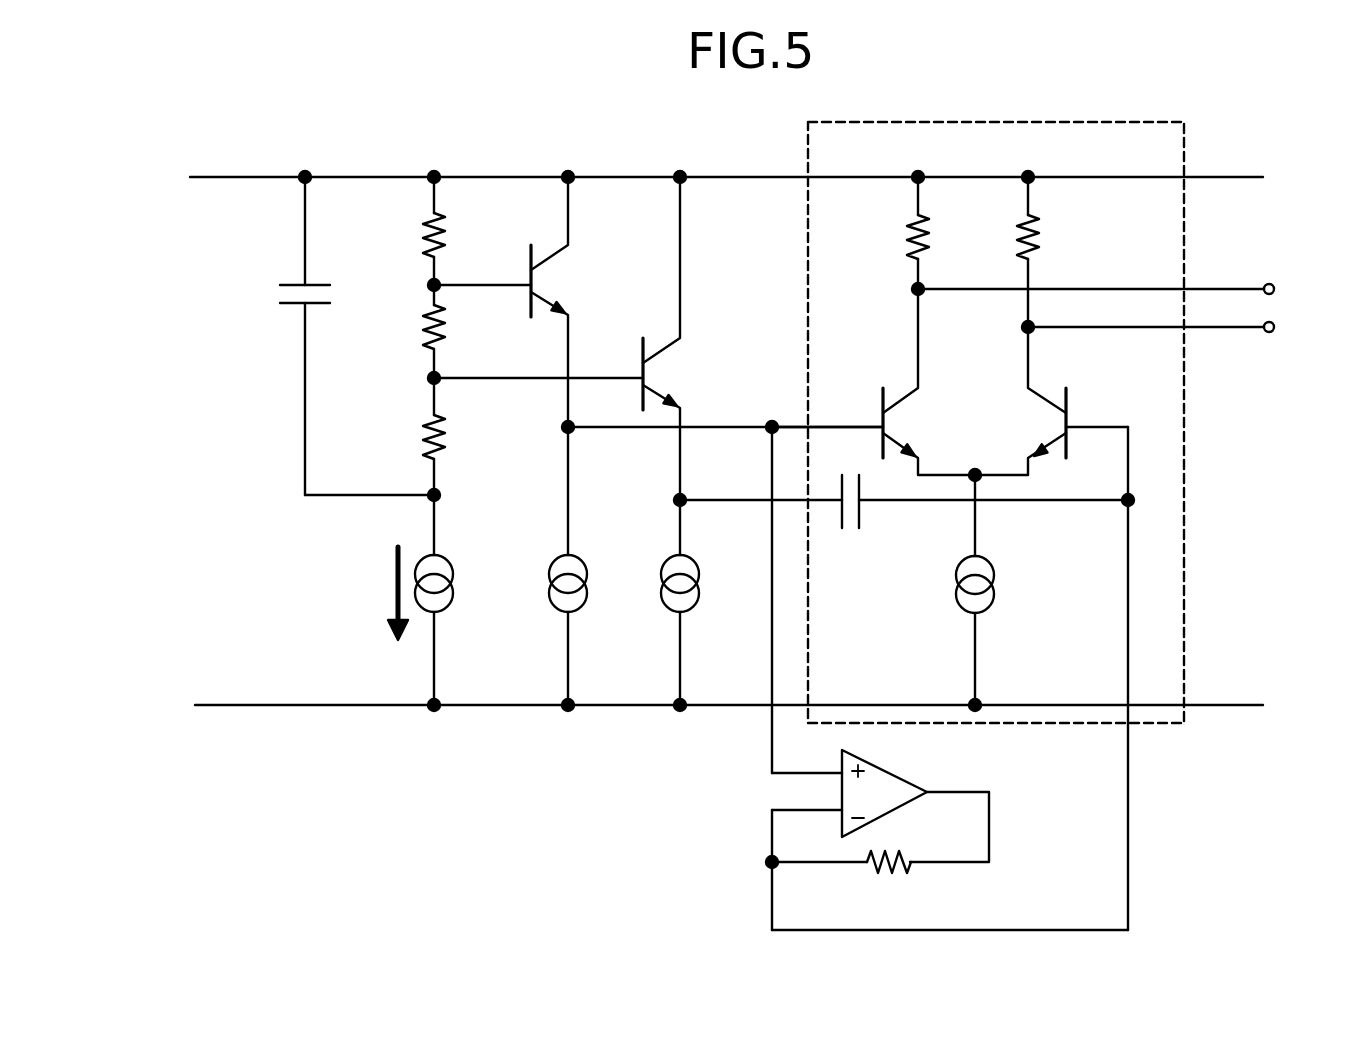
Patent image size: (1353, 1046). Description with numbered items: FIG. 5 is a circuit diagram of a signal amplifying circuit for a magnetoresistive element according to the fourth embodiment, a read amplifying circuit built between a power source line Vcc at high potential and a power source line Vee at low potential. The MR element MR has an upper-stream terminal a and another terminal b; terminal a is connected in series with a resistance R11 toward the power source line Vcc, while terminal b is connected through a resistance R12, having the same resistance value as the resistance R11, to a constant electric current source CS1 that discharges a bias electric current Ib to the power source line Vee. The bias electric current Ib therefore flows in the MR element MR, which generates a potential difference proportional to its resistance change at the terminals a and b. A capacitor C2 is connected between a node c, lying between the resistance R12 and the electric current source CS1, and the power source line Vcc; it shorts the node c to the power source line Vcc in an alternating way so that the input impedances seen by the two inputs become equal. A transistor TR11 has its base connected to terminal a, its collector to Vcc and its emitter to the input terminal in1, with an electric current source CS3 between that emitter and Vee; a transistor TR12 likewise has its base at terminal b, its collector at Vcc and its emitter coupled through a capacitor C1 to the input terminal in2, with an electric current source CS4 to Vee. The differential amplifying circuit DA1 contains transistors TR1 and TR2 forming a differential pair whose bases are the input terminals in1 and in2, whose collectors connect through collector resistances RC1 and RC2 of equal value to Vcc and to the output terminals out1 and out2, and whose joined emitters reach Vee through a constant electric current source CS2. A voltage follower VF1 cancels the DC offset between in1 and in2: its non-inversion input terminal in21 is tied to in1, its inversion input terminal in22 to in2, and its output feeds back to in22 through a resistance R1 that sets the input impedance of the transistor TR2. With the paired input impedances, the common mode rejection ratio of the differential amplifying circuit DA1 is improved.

The power source line at high potential Vcc is at (697, 180).
The power source line at low potential Vee is at (697, 706).
The capacitor C2 is at (336, 333).
The resistance R11 is at (405, 228).
The magnetoresistive element MR is at (410, 331).
The resistance R12 is at (405, 436).
The terminal a is at (465, 285).
The terminal b is at (521, 378).
The node c is at (421, 485).
The constant electric current source CS1 is at (461, 603).
The bias electric current Ib is at (384, 593).
The transistor TR11 is at (581, 299).
The electric current source CS3 is at (595, 566).
The transistor TR12 is at (692, 335).
The electric current source CS4 is at (706, 602).
The differential amplifying circuit DA1 is at (996, 405).
The collector resistance RC1 is at (888, 230).
The collector resistance RC2 is at (1055, 249).
The output terminal out1 is at (1126, 290).
The output terminal out2 is at (1181, 328).
The transistor TR1 is at (929, 382).
The transistor TR2 is at (1020, 401).
The input terminal in1 is at (827, 411).
The input terminal in2 is at (1097, 411).
The capacitor C1 is at (850, 518).
The constant electric current source CS2 is at (1003, 590).
The voltage follower VF1 is at (915, 800).
The non-inversion input terminal in21 is at (780, 773).
The inversion input terminal in22 is at (780, 810).
The resistance R1 is at (838, 882).